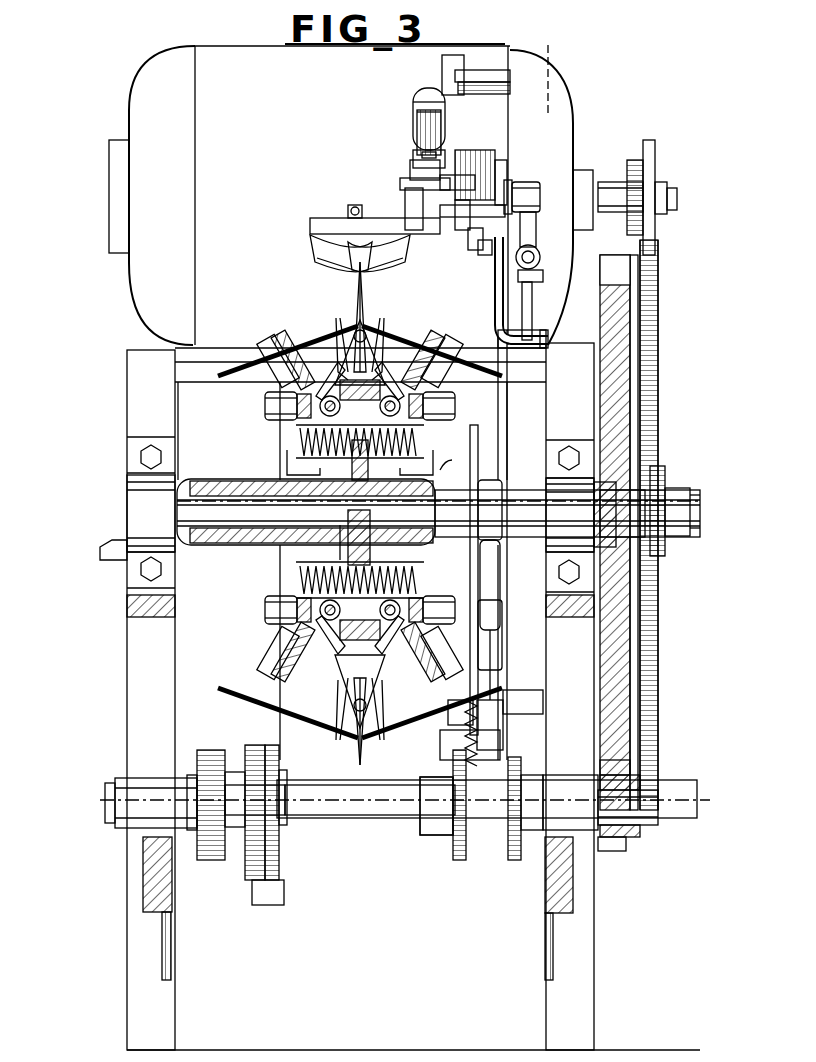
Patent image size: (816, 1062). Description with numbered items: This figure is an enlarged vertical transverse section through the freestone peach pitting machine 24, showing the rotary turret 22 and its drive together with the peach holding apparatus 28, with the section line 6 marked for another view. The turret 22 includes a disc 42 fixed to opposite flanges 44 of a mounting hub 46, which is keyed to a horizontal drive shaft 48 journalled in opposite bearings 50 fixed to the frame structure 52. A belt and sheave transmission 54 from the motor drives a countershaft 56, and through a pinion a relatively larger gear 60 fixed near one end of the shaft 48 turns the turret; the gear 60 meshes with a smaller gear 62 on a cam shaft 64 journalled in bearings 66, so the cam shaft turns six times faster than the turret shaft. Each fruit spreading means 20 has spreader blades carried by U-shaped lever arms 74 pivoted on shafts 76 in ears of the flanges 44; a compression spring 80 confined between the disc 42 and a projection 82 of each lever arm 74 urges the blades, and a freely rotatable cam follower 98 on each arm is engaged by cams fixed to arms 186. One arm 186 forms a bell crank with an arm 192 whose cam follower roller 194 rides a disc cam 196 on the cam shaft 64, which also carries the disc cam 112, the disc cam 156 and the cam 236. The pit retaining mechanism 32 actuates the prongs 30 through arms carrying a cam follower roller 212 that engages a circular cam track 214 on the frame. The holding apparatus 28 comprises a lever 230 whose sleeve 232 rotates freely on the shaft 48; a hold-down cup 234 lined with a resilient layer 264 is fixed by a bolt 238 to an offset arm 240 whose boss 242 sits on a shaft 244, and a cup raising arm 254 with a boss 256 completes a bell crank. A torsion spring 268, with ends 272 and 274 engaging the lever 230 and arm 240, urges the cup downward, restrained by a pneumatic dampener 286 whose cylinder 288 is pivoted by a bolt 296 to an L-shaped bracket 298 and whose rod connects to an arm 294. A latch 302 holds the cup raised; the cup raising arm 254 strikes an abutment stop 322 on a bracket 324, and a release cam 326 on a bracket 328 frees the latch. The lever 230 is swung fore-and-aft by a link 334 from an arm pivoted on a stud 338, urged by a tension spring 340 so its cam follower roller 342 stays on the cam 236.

The section line 6- 6 is at (615, 72).
The fruit spreading means 20 is at (345, 292).
The rotary turret 22 is at (345, 488).
The freestone peach pitting machine 24 is at (605, 125).
The peach holding apparatus 28 is at (405, 128).
The prongs 30 is at (340, 300).
The pit retaining mechanism 32 is at (330, 330).
The disc 42 is at (368, 560).
The flanges 44 is at (340, 560).
The mounting hub 46 is at (300, 478).
The drive shaft 48 is at (655, 510).
The bearings 50 is at (163, 516).
The frame structure 52 is at (124, 381).
The belt and sheave transmission 54 is at (660, 294).
The countershaft 56 is at (688, 505).
The gear 60 is at (620, 278).
The gear 62 is at (630, 768).
The cam shaft 64 is at (650, 795).
The bearings 66 is at (120, 826).
The lever arm 74 is at (300, 408).
The shafts 76 is at (359, 508).
The compression spring 80 is at (300, 450).
The projection 82 is at (296, 435).
The cam follower 98 is at (268, 396).
The disc cam 112 is at (218, 860).
The disc cam 156 is at (512, 855).
The arms 186 is at (275, 706).
The arm 192 is at (270, 902).
The cam follower roller 194 is at (285, 887).
The disc cam 196 is at (275, 855).
The cam follower roller 212 is at (285, 335).
The cam track 214 is at (290, 352).
The lever 230 is at (500, 404).
The sleeve 232 is at (445, 490).
The peach hold-down cup 234 is at (315, 245).
The cam 236 is at (455, 850).
The bolt 238 is at (348, 210).
The offset arm 240 is at (383, 218).
The boss 242 is at (420, 178).
The shaft 244 is at (408, 190).
The cup raising arm 254 is at (540, 247).
The boss 256 is at (525, 190).
The layer 264 is at (318, 262).
The torsion spring 268 is at (470, 155).
The end 272 is at (500, 162).
The end 274 is at (445, 230).
The pneumatic dampener 286 is at (413, 108).
The cylinder 288 is at (417, 120).
The arm 294 is at (420, 152).
The bolt 296 is at (443, 88).
The L-shaped bracket 298 is at (478, 100).
The latch 302 is at (470, 252).
The abutment stop 322 is at (548, 265).
The bracket 324 is at (538, 348).
The release cam 326 is at (485, 256).
The bracket 328 is at (537, 364).
The link 334 is at (492, 620).
The stud 338 is at (512, 710).
The tension spring 340 is at (462, 768).
The cam follower roller 342 is at (447, 706).